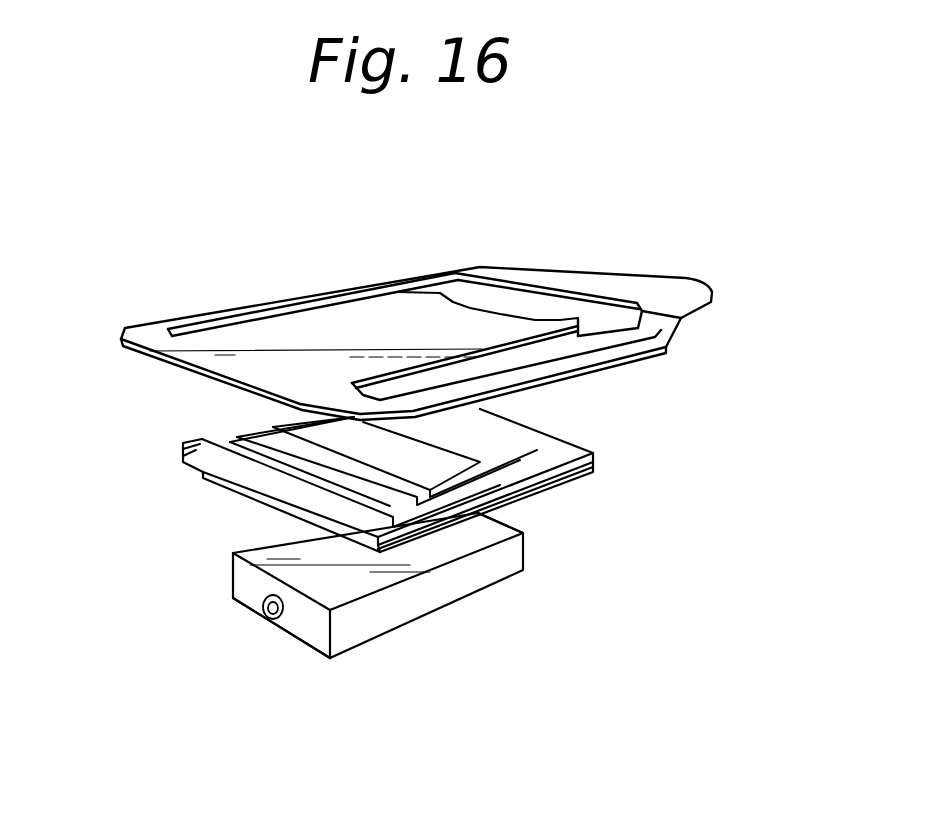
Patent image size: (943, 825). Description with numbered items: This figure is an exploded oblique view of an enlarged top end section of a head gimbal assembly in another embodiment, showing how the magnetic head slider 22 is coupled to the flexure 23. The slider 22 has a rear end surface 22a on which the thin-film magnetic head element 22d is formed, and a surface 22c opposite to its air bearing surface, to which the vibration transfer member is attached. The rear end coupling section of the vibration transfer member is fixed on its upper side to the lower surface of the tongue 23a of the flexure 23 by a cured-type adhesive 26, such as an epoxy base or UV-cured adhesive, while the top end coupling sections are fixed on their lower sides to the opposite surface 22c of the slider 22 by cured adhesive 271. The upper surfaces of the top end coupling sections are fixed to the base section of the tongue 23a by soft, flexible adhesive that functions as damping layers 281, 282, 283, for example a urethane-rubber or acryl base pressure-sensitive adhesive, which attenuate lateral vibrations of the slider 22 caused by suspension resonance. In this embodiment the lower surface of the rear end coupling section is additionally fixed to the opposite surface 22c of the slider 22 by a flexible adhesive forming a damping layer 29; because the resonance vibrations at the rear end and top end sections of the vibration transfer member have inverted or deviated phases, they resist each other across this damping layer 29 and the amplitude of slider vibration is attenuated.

The magnetic head slider 22 is at (418, 600).
The rear end surface 22a is at (318, 630).
The surface opposite to the ABS 22c is at (478, 537).
The thin-film magnetic head element 22d is at (268, 620).
The flexure 23 is at (624, 288).
The tongue 23a is at (412, 322).
The adhesive 26 is at (530, 440).
The adhesive 271 is at (236, 495).
The damping layer 281 is at (183, 452).
The damping layer 282 is at (182, 441).
The damping layer 283 is at (273, 426).
The damping layer 29 is at (547, 487).